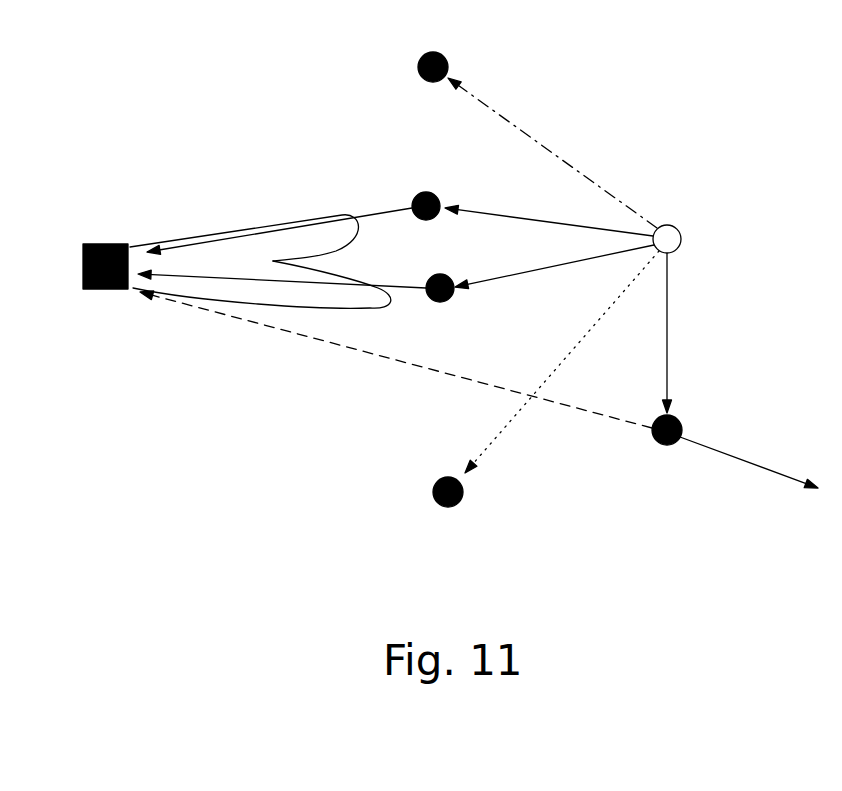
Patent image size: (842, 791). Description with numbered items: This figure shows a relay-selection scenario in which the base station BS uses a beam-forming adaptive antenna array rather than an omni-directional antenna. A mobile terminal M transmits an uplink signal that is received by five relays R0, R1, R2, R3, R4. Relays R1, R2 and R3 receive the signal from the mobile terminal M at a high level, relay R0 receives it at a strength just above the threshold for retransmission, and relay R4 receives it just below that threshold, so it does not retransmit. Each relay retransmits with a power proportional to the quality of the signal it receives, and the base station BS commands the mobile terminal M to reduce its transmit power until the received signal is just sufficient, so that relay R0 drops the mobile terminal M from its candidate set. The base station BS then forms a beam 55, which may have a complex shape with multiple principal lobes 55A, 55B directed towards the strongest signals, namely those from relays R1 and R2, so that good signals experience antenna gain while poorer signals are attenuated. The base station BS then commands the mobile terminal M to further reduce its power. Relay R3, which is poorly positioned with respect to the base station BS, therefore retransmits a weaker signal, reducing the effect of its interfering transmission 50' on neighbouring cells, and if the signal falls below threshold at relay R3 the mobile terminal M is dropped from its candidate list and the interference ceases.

The base station BS is at (105, 256).
The mobile terminal M is at (674, 234).
The relay R0 is at (446, 60).
The relay R1 is at (436, 196).
The relay R2 is at (450, 279).
The relay R3 is at (678, 424).
The relay R4 is at (448, 481).
The beam 55 is at (270, 261).
The principal lobe 55A is at (338, 233).
The principal lobe 55B is at (367, 296).
The interfering transmission 50' is at (749, 462).